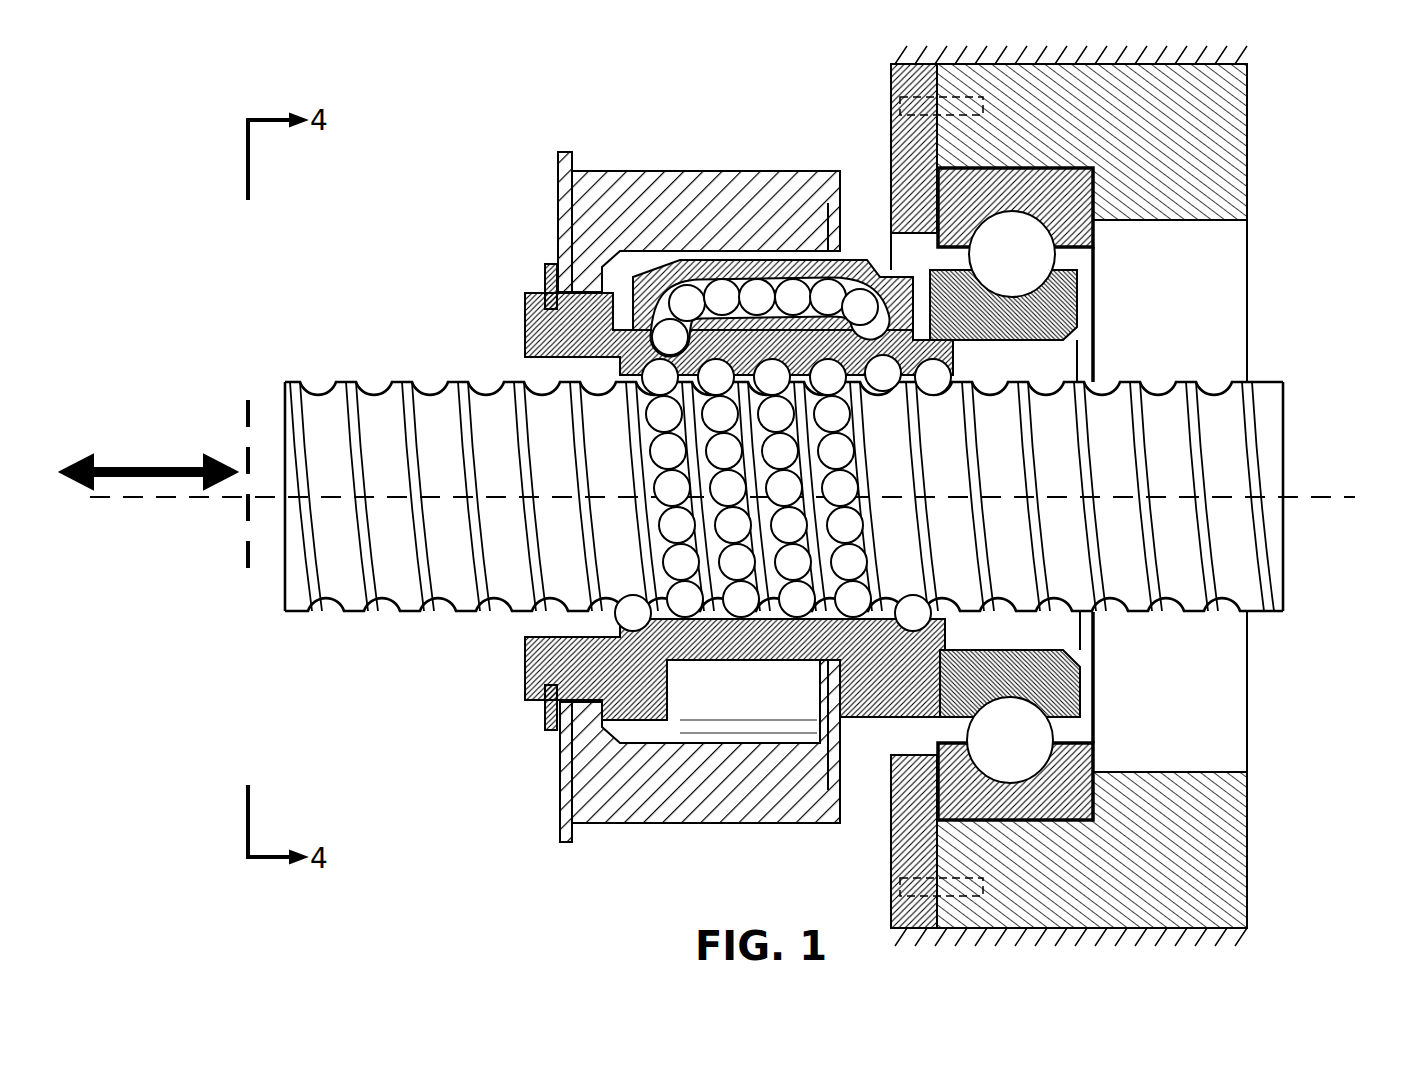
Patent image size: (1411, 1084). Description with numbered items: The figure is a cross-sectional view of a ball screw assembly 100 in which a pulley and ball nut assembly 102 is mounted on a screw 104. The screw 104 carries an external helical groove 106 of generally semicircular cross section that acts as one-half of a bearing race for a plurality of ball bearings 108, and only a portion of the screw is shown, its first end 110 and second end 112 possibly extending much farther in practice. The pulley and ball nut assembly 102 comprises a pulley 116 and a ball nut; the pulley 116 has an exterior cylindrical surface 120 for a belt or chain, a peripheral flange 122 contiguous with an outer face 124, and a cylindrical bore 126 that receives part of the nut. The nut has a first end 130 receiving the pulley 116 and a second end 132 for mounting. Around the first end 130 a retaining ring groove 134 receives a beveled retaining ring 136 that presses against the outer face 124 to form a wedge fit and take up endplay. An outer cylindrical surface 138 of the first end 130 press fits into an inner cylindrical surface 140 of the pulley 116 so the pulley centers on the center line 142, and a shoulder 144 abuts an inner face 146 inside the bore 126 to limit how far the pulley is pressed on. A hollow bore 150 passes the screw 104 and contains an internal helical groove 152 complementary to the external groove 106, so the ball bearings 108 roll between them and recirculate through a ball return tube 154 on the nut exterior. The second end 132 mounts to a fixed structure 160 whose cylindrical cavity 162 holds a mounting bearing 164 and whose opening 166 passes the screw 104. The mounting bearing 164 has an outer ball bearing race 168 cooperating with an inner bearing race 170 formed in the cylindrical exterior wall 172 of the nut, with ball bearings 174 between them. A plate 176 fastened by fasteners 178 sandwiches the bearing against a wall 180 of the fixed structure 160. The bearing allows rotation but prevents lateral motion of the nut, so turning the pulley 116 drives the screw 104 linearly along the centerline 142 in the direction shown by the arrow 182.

The ball screw assembly 100 is at (133, 67).
The pulley and ball nut assembly 102 is at (458, 209).
The screw 104 is at (285, 385).
The external helical groove 106 is at (367, 390).
The ball bearings 108 is at (633, 427).
The first end 110 is at (262, 598).
The second end 112 is at (1299, 606).
The pulley 116 is at (715, 158).
The exterior cylindrical surface 120 is at (700, 172).
The peripheral flange 122 is at (561, 152).
The outer face 124 is at (560, 810).
The cylindrical bore 126 is at (802, 701).
The first end 130 is at (505, 310).
The second end 132 is at (1136, 333).
The retaining ring groove 134 is at (545, 285).
The retaining ring 136 is at (548, 268).
The outer cylindrical surface 138 is at (578, 300).
The inner cylindrical surface 140 is at (527, 333).
The center line 142 is at (1328, 491).
The shoulder 144 is at (583, 283).
The inner face 146 is at (630, 295).
The hollow bore 150 is at (517, 626).
The internal helical groove 152 is at (935, 600).
The ball return tube 154 is at (833, 236).
The fixed structure 160 is at (1288, 150).
The cylindrical cavity 162 is at (1107, 738).
The mounting bearing 164 is at (1113, 260).
The opening 166 is at (1266, 689).
The outer ball bearing race 168 is at (1067, 241).
The inner bearing race 170 is at (1053, 309).
The cylindrical exterior wall 172 is at (940, 268).
The ball bearings 174 is at (1060, 262).
The plate 176 is at (897, 140).
The fasteners 178 is at (898, 92).
The wall 180 is at (1060, 782).
The arrow 182 is at (197, 460).